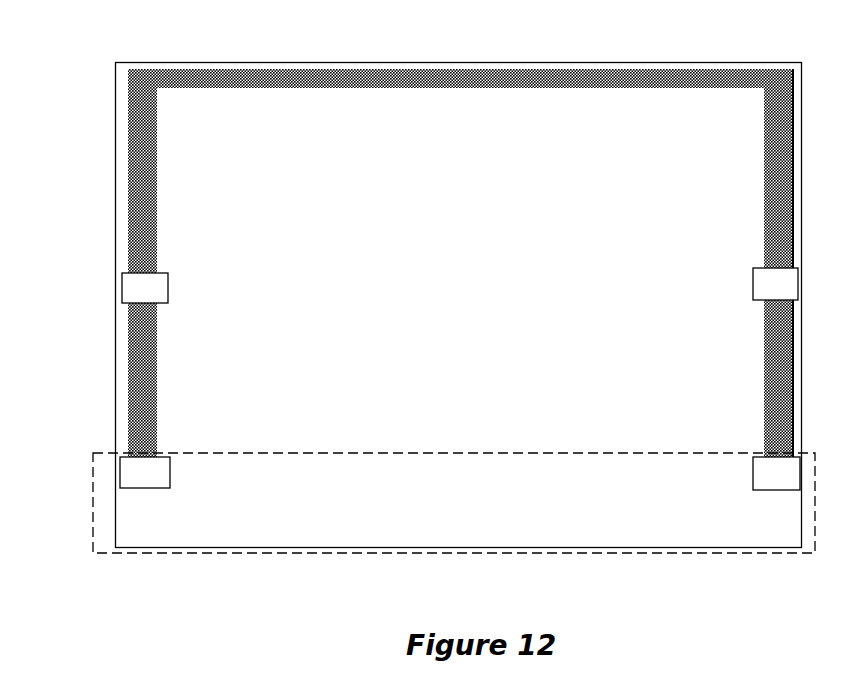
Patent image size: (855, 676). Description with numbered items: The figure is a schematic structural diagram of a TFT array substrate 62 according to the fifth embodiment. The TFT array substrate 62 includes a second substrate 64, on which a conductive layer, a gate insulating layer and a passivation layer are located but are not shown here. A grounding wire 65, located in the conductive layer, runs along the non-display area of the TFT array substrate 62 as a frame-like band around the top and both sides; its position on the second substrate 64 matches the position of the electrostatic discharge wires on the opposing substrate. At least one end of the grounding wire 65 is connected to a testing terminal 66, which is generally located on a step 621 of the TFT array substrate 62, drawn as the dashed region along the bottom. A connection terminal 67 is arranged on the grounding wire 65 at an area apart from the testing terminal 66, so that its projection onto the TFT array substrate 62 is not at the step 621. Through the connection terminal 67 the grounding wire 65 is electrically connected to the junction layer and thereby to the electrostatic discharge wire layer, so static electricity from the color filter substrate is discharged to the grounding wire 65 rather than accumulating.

The TFT array substrate 62 is at (50, 79).
The step 621 is at (443, 553).
The second substrate 64 is at (115, 372).
The grounding wire 65 is at (288, 78).
The testing terminal 66 is at (460, 473).
The connection terminal 67 is at (460, 285).